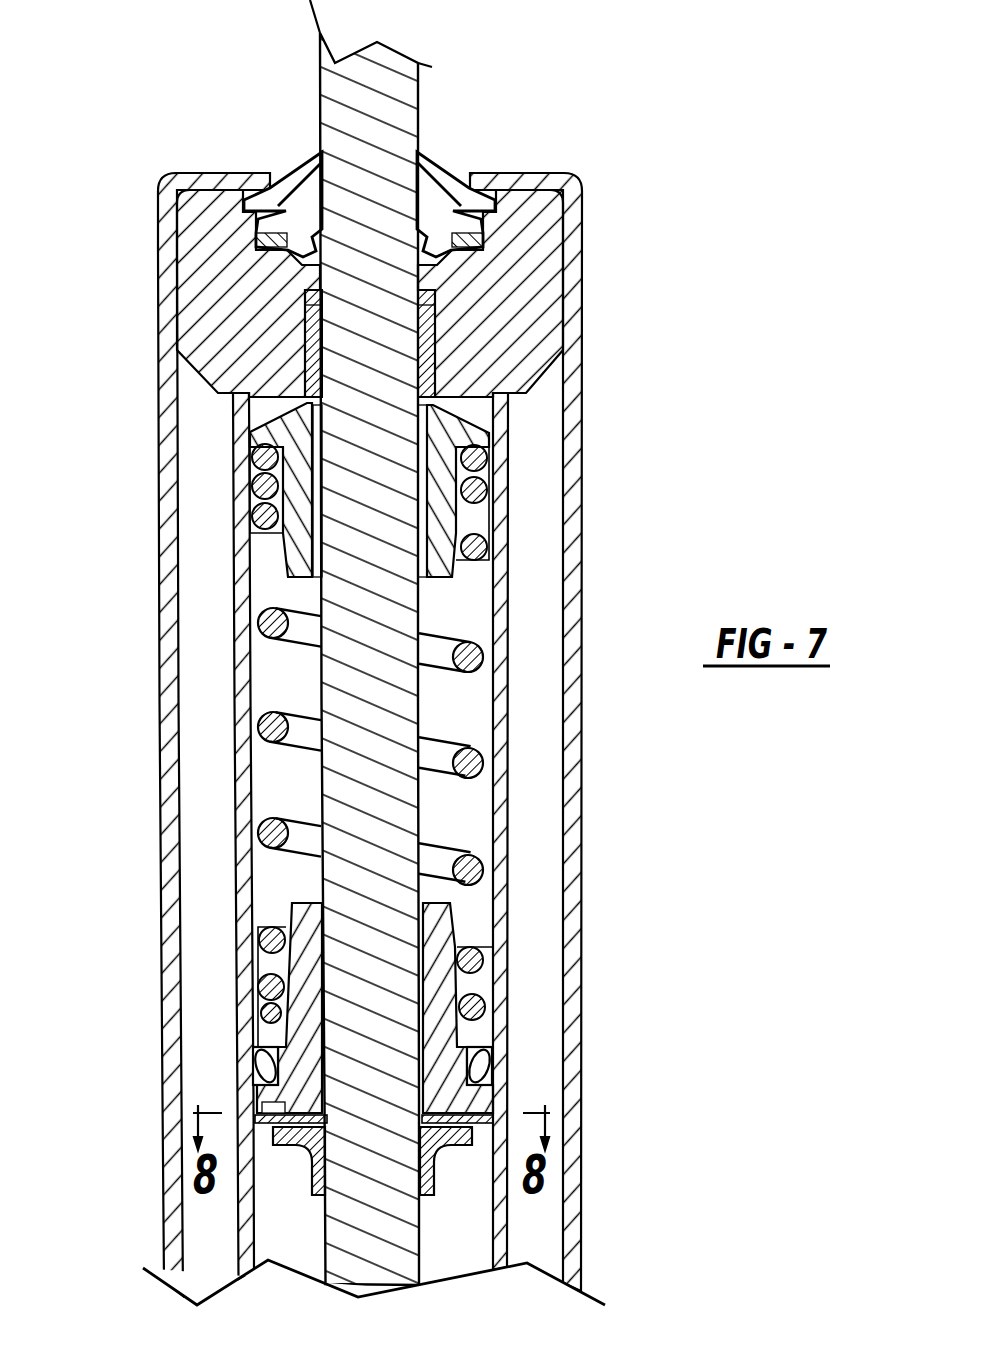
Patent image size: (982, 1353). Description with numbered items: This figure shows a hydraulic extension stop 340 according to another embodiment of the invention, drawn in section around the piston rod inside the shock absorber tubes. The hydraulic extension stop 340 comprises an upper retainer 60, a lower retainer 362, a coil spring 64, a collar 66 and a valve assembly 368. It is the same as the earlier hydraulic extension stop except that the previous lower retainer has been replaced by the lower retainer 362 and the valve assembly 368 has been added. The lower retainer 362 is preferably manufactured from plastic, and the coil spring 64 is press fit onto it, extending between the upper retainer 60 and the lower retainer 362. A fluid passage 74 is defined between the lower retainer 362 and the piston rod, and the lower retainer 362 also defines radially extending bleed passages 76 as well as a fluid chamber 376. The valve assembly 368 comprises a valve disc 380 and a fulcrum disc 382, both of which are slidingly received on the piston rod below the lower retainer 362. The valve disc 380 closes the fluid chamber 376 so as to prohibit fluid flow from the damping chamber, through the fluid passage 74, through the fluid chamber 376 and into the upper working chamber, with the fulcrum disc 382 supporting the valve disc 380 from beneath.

The upper retainer 60 is at (433, 410).
The coil spring 64 is at (472, 868).
The collar 66 is at (427, 1125).
The fluid passage 74 is at (423, 932).
The bleed passages 76 is at (495, 1138).
The hydraulic extension stop 340 is at (458, 710).
The lower retainer 362 is at (483, 1037).
The valve assembly 368 is at (516, 1057).
The fluid chamber 376 is at (273, 1108).
The valve disc 380 is at (259, 1114).
The fulcrum disc 382 is at (440, 1128).